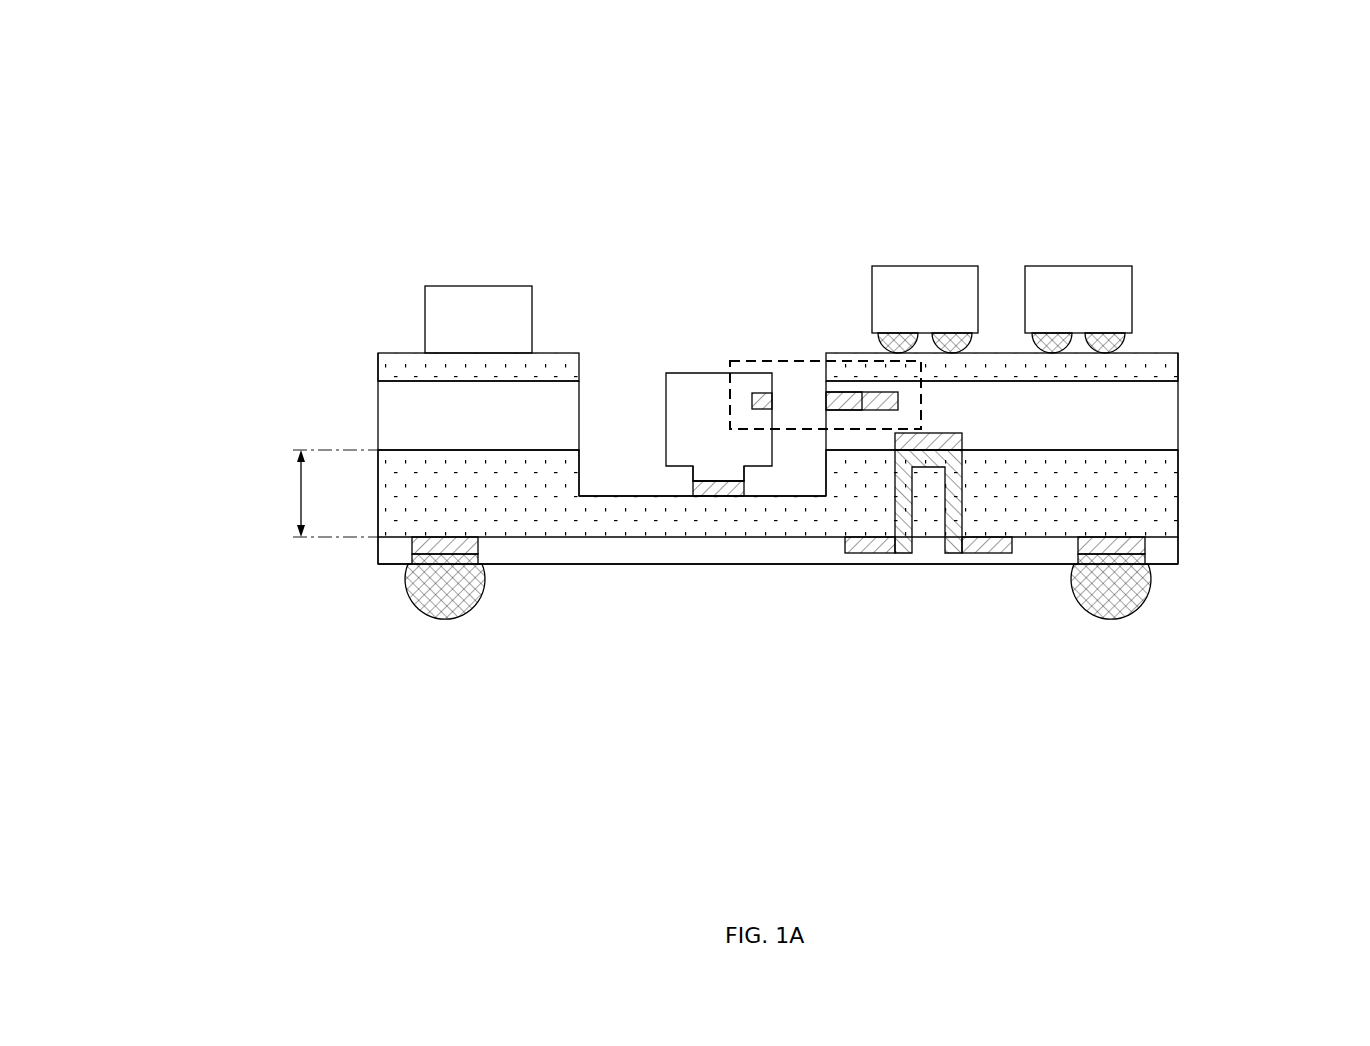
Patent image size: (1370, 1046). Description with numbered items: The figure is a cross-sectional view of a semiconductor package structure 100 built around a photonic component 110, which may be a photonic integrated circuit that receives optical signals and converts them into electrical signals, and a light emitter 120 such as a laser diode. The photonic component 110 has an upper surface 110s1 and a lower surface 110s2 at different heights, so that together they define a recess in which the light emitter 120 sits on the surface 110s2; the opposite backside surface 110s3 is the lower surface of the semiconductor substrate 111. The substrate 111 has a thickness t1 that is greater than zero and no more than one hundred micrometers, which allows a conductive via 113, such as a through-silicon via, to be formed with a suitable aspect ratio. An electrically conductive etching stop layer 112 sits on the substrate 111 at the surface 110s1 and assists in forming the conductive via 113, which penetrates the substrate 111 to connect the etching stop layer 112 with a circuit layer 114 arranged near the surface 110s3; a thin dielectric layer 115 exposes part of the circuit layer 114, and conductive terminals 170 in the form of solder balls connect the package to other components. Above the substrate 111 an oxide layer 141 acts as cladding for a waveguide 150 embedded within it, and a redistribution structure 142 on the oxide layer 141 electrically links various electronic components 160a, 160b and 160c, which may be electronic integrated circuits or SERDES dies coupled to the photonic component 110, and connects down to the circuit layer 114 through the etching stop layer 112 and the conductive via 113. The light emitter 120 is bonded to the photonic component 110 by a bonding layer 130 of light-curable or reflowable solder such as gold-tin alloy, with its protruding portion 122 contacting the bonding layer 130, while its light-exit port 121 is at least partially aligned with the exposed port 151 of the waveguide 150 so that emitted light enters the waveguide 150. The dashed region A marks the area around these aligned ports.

The semiconductor package structure 100 is at (164, 98).
The photonic component 110 is at (789, 407).
The surface 110s1 is at (408, 450).
The surface 110s2 is at (622, 496).
The surface 110s3 is at (395, 565).
The substrate 111 is at (1160, 500).
The etching stop layer 112 is at (955, 439).
The conductive via 113 is at (953, 483).
The circuit layer 114 is at (1133, 545).
The dielectric layer 115 is at (1160, 558).
The light emitter 120 is at (675, 385).
The port 121 is at (760, 402).
The protruding portion 122 is at (722, 472).
The bonding layer 130 is at (718, 488).
The oxide layer 141 is at (1160, 390).
The redistribution structure 142 is at (1160, 358).
The waveguide 150 is at (875, 400).
The port 151 is at (838, 400).
The electronic component 160a is at (922, 272).
The electronic component 160b is at (1073, 272).
The electronic component 160c is at (474, 293).
The conductive terminal 170 is at (425, 603).
The thickness t1 is at (320, 493).
The enlarged region A is at (745, 361).